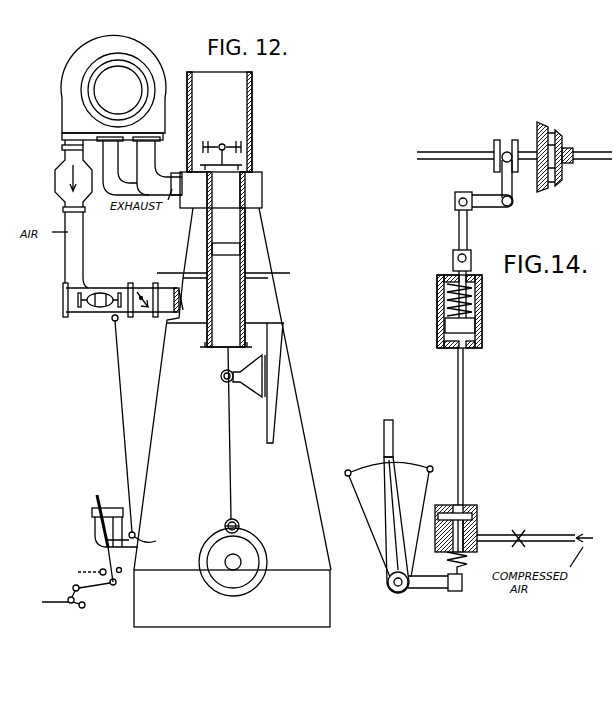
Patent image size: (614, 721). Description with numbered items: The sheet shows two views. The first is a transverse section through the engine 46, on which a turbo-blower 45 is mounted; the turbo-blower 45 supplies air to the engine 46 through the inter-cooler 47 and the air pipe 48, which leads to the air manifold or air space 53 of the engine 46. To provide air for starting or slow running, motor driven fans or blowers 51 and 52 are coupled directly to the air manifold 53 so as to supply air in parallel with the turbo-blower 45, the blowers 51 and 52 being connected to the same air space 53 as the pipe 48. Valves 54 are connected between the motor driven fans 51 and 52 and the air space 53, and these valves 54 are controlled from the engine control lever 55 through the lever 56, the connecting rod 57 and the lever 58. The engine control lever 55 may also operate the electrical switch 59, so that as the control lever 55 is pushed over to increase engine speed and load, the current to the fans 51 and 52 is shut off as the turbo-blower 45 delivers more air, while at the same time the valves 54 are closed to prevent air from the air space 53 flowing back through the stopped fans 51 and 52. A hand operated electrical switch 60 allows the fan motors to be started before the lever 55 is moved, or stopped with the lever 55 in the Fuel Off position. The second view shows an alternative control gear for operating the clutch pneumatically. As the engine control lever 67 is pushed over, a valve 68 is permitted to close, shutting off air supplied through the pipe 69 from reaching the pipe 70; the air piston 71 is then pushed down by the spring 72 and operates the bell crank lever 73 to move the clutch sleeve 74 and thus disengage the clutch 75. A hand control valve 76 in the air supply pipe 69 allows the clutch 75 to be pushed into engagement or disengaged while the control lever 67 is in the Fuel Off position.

In FIG. 12, the turbo-blower 45 is at (162, 70).
In FIG. 12, the engine 46 is at (292, 408).
In FIG. 12, the inter-cooler 47 is at (62, 184).
In FIG. 12, the air pipe 48 is at (75, 246).
In FIG. 12, the motor driven fan 51 is at (87, 316).
In FIG. 12, the motor driven fan 52 is at (96, 339).
In FIG. 12, the air manifold 53 is at (191, 302).
In FIG. 12, the valve 54 is at (139, 285).
In FIG. 12, the engine control lever 55 is at (95, 530).
In FIG. 12, the lever 56 is at (144, 535).
In FIG. 12, the connecting rod 57 is at (132, 427).
In FIG. 12, the lever 58 is at (119, 320).
In FIG. 12, the electrical switch 59 is at (114, 585).
In FIG. 12, the hand operated electrical switch 60 is at (78, 608).
In FIG. 14, the engine control lever 67 is at (395, 541).
In FIG. 14, the valve 68 is at (478, 509).
In FIG. 14, the air supply pipe 69 is at (542, 539).
In FIG. 14, the pipe 70 is at (463, 423).
In FIG. 14, the air piston 71 is at (468, 331).
In FIG. 14, the spring 72 is at (483, 298).
In FIG. 14, the bell crank lever 73 is at (485, 209).
In FIG. 14, the clutch sleeve 74 is at (502, 138).
In FIG. 14, the clutch 75 is at (542, 124).
In FIG. 14, the hand control valve 76 is at (522, 543).